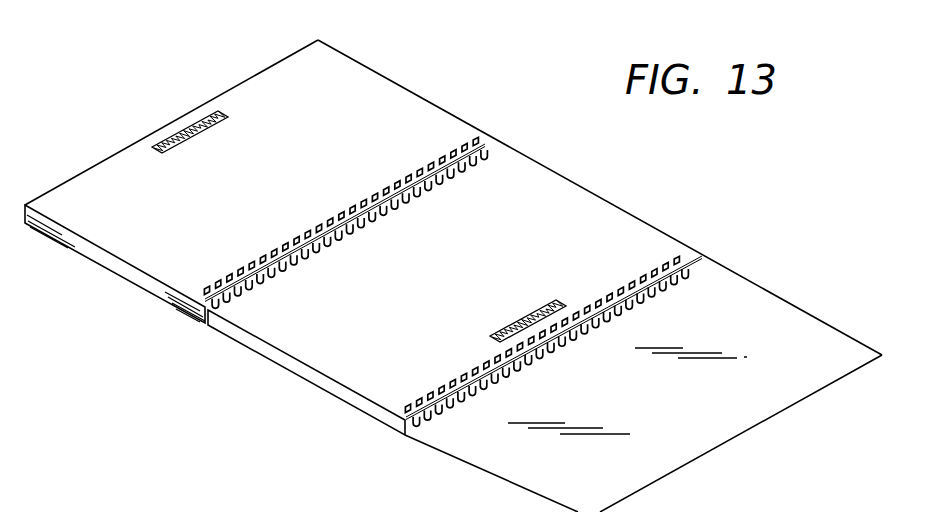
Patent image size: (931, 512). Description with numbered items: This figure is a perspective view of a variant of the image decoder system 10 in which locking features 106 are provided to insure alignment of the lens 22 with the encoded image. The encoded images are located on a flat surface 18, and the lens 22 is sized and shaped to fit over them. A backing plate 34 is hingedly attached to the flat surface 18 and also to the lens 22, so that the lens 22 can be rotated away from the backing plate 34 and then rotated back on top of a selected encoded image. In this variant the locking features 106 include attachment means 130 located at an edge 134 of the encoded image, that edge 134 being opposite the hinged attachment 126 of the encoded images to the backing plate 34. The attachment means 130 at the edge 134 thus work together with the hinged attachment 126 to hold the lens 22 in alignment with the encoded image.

The image decoder system 10 is at (770, 205).
The flat surface 18 is at (423, 117).
The lens 22 is at (760, 302).
The backing plate 34 is at (561, 198).
The locking features 106 is at (218, 122).
The hinged attachment 126 is at (481, 148).
The attachment means 130 is at (162, 150).
The edge 134 is at (258, 72).